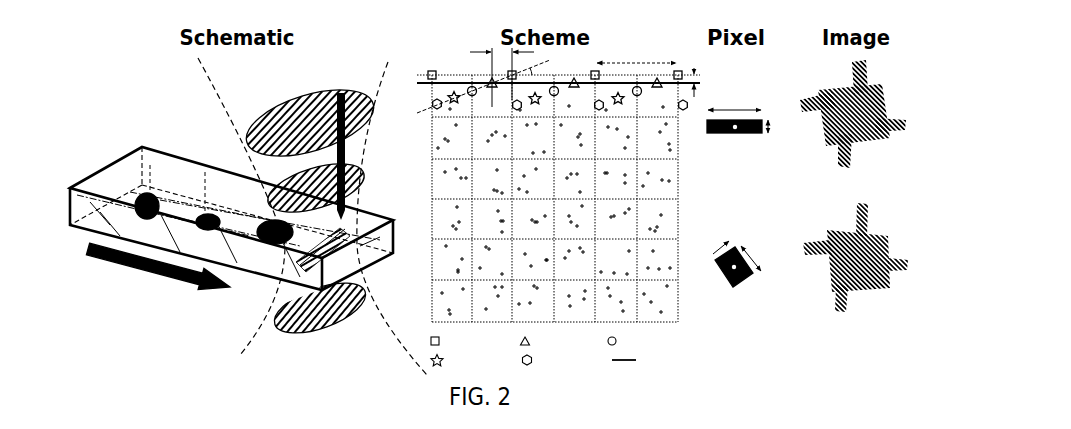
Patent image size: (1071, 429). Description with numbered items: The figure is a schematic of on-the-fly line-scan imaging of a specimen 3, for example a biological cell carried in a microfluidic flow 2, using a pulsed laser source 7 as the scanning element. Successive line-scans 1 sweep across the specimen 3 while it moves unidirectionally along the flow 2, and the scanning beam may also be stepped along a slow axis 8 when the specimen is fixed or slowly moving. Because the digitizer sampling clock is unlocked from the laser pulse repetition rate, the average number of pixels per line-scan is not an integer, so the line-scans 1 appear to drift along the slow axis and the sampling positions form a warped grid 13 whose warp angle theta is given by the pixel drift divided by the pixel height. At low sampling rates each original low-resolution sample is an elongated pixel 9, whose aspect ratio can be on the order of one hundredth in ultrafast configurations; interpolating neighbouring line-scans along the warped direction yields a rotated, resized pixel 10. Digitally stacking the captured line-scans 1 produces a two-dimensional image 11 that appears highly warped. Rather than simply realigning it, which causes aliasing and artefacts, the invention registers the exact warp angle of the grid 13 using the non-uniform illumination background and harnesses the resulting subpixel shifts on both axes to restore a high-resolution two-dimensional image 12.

The line-scan 1 is at (218, 102).
The microfluidic flow 2 is at (157, 272).
The specimen 3 is at (152, 160).
The pulsed laser source 7 is at (298, 103).
The slow axis 8 is at (120, 160).
The elongated pixel 9 is at (729, 139).
The rotated pixel 10 is at (724, 282).
The 2D image 11 is at (832, 81).
The high-resolution 2D image 12 is at (829, 227).
The grid 13 is at (684, 200).